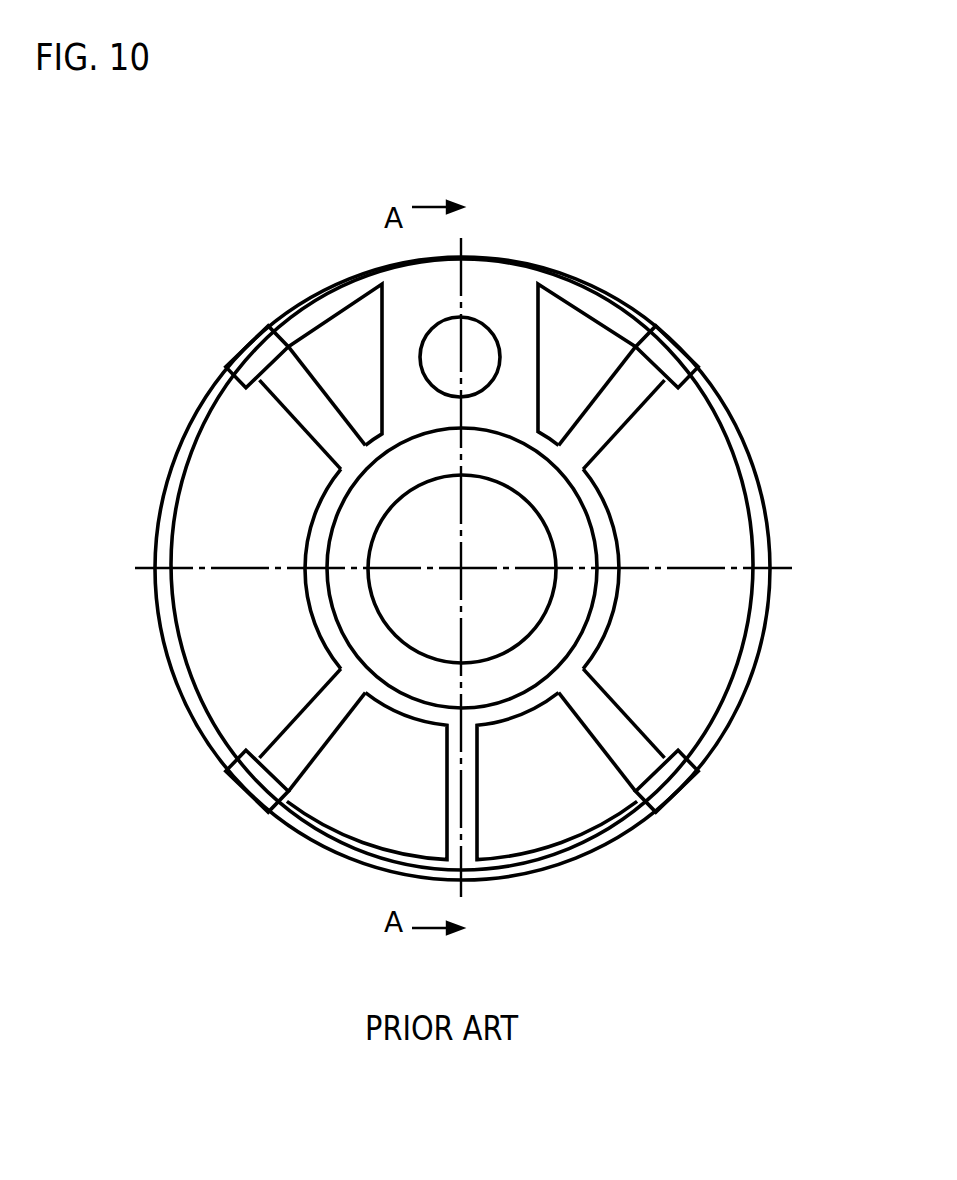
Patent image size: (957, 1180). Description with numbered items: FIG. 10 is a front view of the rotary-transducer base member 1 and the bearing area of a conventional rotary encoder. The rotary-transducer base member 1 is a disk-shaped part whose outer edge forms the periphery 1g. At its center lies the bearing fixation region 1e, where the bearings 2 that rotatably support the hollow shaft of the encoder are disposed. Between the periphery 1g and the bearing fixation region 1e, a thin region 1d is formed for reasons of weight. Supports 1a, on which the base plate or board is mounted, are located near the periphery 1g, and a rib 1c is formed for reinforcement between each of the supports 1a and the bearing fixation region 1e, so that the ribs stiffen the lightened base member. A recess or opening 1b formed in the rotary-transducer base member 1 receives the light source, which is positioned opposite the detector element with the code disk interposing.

The rotary-transducer base member 1 is at (253, 664).
The supports 1a is at (663, 352).
The recess or opening 1b is at (470, 347).
The rib 1c is at (288, 750).
The thin region 1d is at (693, 465).
The bearing fixation region 1e is at (603, 540).
The periphery 1g is at (737, 693).
The bearings 2 is at (360, 480).